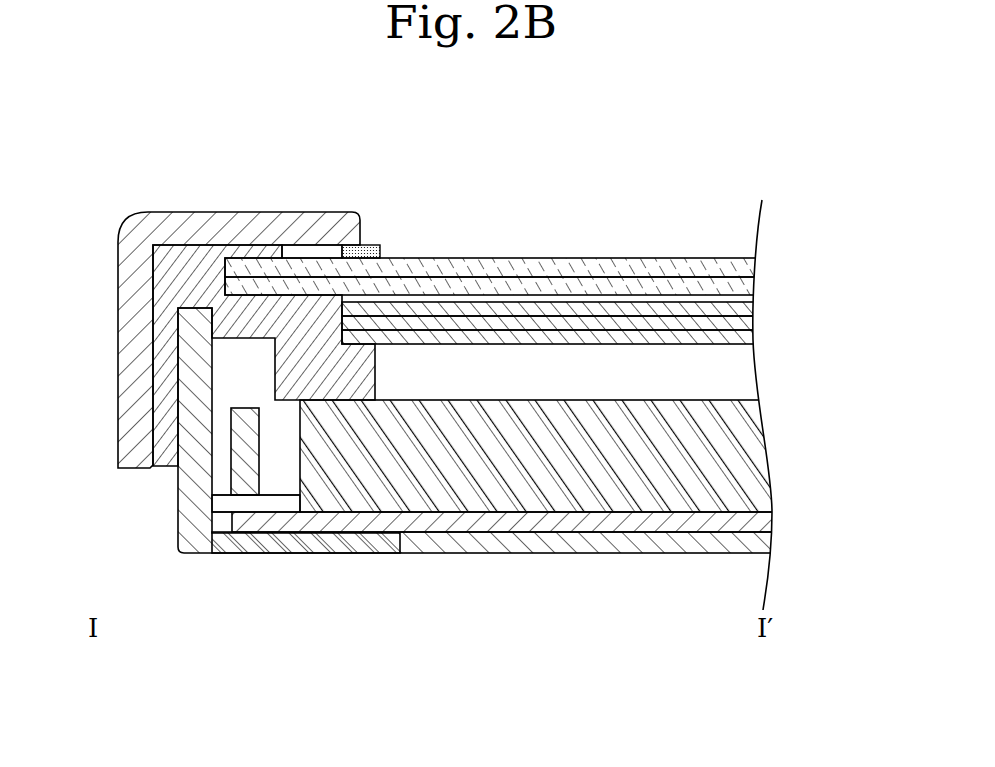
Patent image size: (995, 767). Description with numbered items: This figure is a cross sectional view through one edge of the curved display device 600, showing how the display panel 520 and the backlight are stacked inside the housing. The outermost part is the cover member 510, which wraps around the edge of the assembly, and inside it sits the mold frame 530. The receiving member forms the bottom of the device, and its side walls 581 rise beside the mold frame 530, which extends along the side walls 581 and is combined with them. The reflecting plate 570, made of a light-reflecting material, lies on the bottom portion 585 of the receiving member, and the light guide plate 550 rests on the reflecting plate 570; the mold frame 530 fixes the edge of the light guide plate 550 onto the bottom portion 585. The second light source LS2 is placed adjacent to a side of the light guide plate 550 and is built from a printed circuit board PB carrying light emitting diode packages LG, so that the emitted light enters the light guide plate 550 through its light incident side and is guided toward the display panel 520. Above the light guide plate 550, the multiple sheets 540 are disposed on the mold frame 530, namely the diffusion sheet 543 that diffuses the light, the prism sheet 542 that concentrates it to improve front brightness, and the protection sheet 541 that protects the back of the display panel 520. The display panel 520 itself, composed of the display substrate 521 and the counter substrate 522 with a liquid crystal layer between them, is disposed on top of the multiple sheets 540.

The curved display device 600 is at (650, 220).
The cover member 510 is at (128, 345).
The mold frame 530 is at (163, 280).
The display panel 520 is at (560, 262).
The counter substrate 522 is at (743, 268).
The display substrate 521 is at (743, 288).
The multiple sheets 540 is at (619, 331).
The protection sheet 541 is at (743, 308).
The prism sheet 542 is at (743, 322).
The diffusion sheet 543 is at (743, 336).
The light guide plate 550 is at (748, 458).
The reflecting plate 570 is at (748, 522).
The side walls 581 is at (187, 487).
The bottom portion 585 is at (748, 543).
The printed circuit board PB is at (223, 505).
The light emitting diode packages LG is at (246, 485).
The second light source LS2 is at (253, 530).